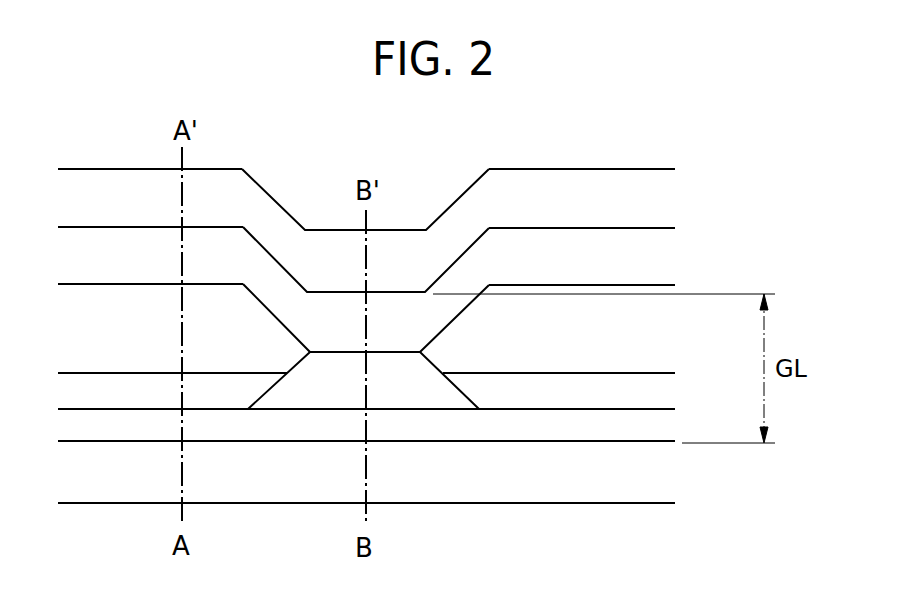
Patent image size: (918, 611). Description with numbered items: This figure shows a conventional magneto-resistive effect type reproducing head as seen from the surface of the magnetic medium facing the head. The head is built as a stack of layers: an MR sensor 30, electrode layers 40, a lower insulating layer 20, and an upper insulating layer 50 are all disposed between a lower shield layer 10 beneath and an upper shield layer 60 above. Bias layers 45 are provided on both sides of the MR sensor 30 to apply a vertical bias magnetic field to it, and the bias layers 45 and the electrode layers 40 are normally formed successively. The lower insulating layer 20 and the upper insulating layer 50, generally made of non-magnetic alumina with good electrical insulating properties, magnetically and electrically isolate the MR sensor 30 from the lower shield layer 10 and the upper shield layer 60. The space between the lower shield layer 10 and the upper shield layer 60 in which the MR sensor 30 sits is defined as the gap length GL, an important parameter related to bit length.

The lower shield layer 10 is at (646, 470).
The lower insulating layer 20 is at (559, 428).
The MR sensor 30 is at (307, 383).
The electrode layers 40 is at (110, 300).
The bias layers 45 is at (118, 382).
The upper insulating layer 50 is at (243, 257).
The upper shield layer 60 is at (601, 210).